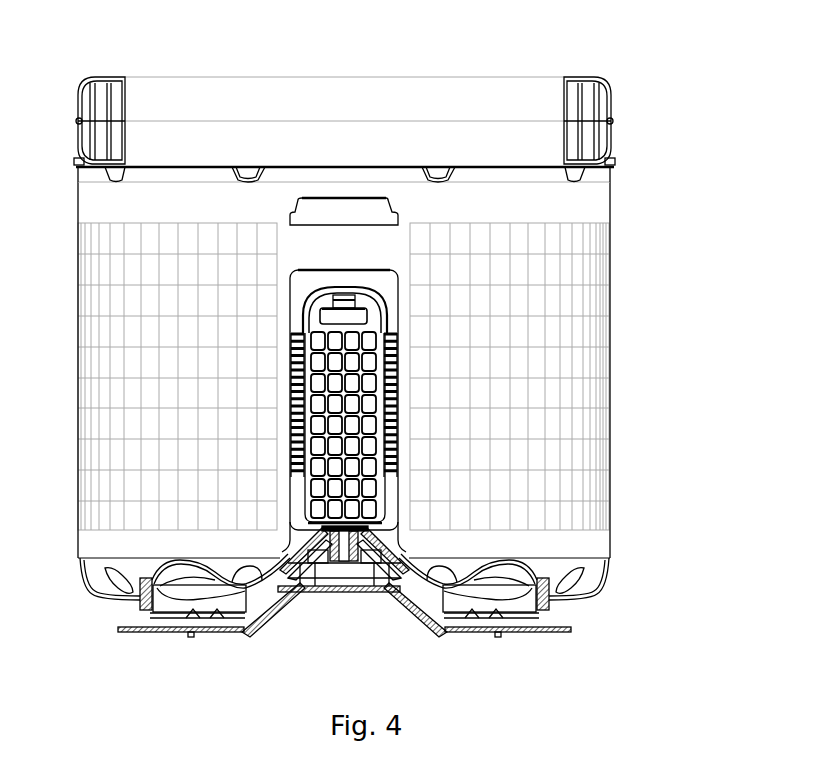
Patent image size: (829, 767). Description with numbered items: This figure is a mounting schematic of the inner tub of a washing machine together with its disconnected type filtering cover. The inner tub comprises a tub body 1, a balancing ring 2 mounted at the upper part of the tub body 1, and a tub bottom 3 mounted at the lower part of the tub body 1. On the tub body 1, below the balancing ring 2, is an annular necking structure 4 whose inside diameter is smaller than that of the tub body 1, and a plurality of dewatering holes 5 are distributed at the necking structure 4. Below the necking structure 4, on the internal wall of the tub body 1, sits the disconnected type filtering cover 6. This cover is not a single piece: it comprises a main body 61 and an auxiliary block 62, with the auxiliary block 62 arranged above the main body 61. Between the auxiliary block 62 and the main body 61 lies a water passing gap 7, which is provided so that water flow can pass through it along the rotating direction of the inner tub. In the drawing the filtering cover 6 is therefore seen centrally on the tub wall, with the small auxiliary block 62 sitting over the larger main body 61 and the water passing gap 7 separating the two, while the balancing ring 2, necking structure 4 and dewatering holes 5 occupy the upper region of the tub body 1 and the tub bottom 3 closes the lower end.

The tub body 1 is at (598, 293).
The balancing ring 2 is at (600, 113).
The tub bottom 3 is at (300, 590).
The annular necking structure 4 is at (614, 176).
The dewatering holes 5 is at (614, 166).
The disconnected type filtering cover 6 is at (400, 320).
The main body 61 is at (398, 448).
The auxiliary block 62 is at (340, 207).
The water passing gap 7 is at (352, 245).